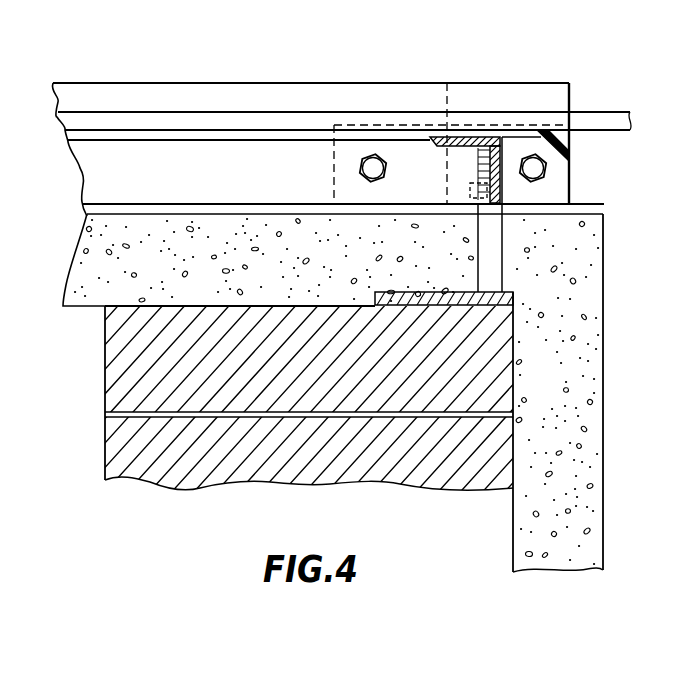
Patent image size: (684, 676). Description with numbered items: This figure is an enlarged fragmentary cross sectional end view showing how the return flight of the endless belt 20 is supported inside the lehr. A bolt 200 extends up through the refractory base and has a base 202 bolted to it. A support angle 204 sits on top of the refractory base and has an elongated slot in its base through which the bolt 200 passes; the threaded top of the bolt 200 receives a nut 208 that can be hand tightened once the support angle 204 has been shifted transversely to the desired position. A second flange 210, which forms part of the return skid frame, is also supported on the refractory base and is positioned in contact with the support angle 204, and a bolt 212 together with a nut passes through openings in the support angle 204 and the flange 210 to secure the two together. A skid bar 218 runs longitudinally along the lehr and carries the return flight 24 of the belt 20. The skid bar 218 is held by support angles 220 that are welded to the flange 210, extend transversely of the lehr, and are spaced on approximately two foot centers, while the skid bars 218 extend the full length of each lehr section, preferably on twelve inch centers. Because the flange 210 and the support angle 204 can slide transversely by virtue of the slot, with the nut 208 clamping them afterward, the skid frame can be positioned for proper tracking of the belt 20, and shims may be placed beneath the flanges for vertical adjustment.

The endless belt 20 is at (300, 98).
The second flange 210 is at (367, 92).
The return flight 24 is at (230, 128).
The skid bar 218 is at (235, 140).
The support angle 204 is at (352, 152).
The bolt 212 is at (384, 167).
The nut 208 is at (470, 194).
The support angle 220 is at (500, 172).
The base 202 is at (415, 290).
The bolt 200 is at (495, 258).